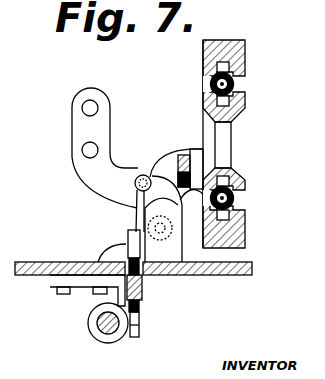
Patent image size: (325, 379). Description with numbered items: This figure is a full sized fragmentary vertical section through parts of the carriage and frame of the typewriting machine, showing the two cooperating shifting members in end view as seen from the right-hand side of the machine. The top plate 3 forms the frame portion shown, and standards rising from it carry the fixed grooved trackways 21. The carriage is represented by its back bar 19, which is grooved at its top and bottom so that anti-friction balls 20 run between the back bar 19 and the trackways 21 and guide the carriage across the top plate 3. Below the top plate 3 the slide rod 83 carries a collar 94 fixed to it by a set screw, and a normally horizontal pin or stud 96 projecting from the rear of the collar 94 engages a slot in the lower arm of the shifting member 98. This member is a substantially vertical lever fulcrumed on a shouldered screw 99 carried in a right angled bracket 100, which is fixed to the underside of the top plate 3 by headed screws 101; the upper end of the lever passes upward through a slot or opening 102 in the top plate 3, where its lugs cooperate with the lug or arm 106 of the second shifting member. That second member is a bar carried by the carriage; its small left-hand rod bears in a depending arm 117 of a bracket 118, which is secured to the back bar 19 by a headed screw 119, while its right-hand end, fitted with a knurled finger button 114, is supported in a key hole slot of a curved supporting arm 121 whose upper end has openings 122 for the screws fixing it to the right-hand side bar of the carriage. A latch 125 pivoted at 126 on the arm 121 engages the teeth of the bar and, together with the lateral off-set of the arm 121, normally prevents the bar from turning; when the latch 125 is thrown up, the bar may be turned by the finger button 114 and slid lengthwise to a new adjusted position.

The top plate 3 is at (43, 264).
The back bar 19 is at (231, 140).
The anti-friction balls 20 is at (234, 84).
The grooved trackways 21 is at (244, 56).
The slide rod 83 is at (108, 335).
The collar 94 is at (96, 327).
The pin or stud 96 is at (140, 325).
The shifting member 98 is at (143, 295).
The shouldered screw 99 is at (140, 306).
The right angled bracket 100 is at (82, 283).
The headed screws 101 is at (95, 295).
The slot or opening 102 is at (108, 246).
The lug or arm 106 is at (130, 244).
The knurled finger button 114 is at (177, 248).
The depending arm 117 is at (164, 157).
The bracket 118 is at (195, 149).
The headed screw 119 is at (184, 149).
The curved supporting arm 121 is at (84, 184).
The openings 122 is at (85, 113).
The latch 125 is at (137, 222).
The pivot 126 is at (135, 183).